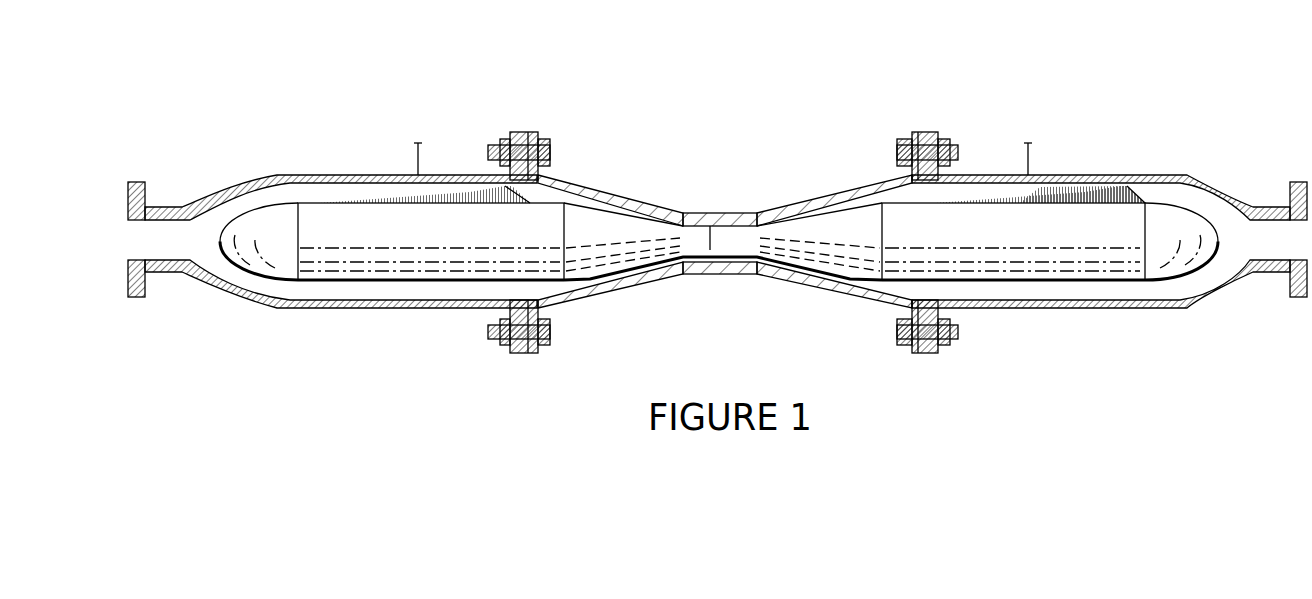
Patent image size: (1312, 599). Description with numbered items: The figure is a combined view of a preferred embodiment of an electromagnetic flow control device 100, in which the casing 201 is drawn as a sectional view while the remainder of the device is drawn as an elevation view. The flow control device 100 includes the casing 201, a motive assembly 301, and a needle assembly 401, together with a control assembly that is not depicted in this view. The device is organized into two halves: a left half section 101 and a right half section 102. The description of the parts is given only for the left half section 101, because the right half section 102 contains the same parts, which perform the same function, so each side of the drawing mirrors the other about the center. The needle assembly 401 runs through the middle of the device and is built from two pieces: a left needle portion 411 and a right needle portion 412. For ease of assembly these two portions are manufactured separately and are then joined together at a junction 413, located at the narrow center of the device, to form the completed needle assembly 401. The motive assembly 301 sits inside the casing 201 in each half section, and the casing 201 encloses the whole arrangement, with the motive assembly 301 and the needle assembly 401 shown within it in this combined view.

The electromagnetic flow control device 100 is at (717, 193).
The left half section 101 is at (346, 211).
The right half section 102 is at (1128, 127).
The casing 201 is at (223, 182).
The motive assembly 301 is at (357, 270).
The needle assembly 401 is at (725, 243).
The left needle portion 411 is at (641, 265).
The right needle portion 412 is at (785, 277).
The junction 413 is at (712, 250).